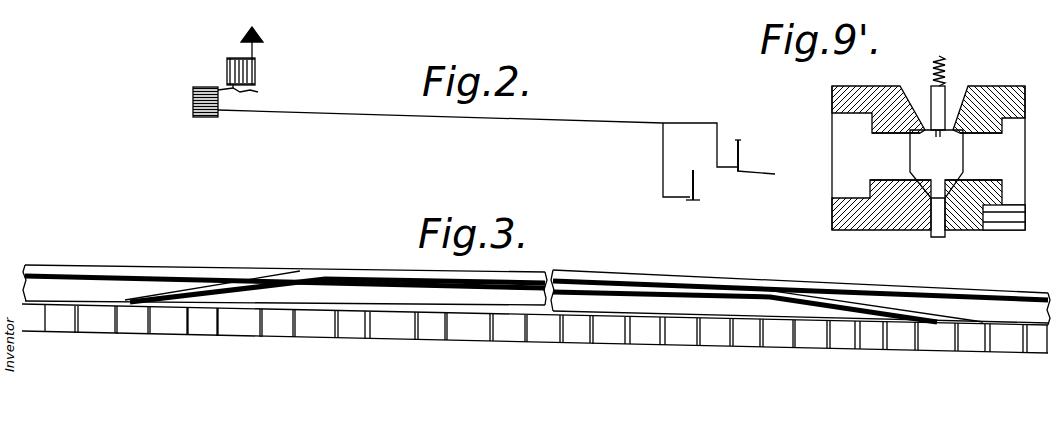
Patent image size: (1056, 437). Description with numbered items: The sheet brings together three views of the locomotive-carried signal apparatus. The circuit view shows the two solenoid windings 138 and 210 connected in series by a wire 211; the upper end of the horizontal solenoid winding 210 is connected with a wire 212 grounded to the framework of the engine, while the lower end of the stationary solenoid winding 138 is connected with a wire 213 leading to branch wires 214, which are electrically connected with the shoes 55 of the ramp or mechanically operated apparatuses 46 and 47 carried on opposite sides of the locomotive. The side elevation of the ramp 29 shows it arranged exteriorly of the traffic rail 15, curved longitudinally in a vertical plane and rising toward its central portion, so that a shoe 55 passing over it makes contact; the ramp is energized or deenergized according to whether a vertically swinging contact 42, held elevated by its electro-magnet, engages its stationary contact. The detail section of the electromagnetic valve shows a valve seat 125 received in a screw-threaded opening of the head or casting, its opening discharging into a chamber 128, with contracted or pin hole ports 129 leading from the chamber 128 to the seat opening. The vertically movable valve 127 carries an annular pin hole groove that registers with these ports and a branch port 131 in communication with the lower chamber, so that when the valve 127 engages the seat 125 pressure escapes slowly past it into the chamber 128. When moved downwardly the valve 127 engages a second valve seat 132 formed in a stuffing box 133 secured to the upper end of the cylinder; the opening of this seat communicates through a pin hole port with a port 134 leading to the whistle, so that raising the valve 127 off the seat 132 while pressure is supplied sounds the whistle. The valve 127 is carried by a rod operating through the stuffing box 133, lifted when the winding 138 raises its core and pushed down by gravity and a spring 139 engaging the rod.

In FIG. 2, the wire 212 is at (258, 50).
In FIG. 2, the horizontal solenoid winding 210 is at (225, 68).
In FIG. 2, the wire 211 is at (259, 92).
In FIG. 2, the stationary solenoid winding 138 is at (190, 110).
In FIG. 2, the wire 213 is at (380, 118).
In FIG. 2, the branch wires 214 is at (700, 160).
In FIG. 2, the ramp or mechanically operated apparatus 46 is at (748, 163).
In FIG. 2, the ramp or mechanically operated apparatus 47 is at (706, 187).
In FIG. 2, the shoe 55 is at (688, 201).
In FIG. 3, the traffic rail 15 is at (113, 272).
In FIG. 3, the ramp 29 is at (348, 266).
In FIG. 9', the vertically swinging contact 42 is at (882, 5).
In FIG. 9', the valve seat 125 is at (870, 120).
In FIG. 9', the chamber 128 is at (858, 142).
In FIG. 9', the vertically movable valve 127 is at (930, 157).
In FIG. 9', the contracted or pin hole ports 129 is at (905, 100).
In FIG. 9', the spring 139 is at (947, 56).
In FIG. 9', the branch port 131 is at (947, 140).
In FIG. 9', the stuffing box 133 is at (960, 195).
In FIG. 9', the valve seat 132 is at (842, 198).
In FIG. 9', the port 134 is at (1008, 222).